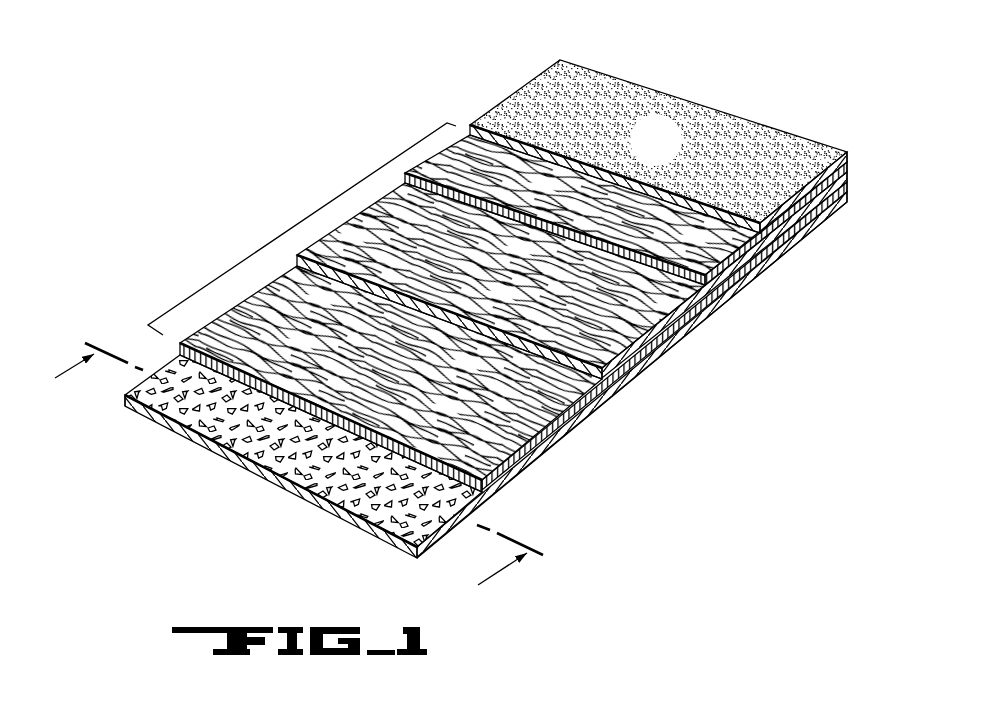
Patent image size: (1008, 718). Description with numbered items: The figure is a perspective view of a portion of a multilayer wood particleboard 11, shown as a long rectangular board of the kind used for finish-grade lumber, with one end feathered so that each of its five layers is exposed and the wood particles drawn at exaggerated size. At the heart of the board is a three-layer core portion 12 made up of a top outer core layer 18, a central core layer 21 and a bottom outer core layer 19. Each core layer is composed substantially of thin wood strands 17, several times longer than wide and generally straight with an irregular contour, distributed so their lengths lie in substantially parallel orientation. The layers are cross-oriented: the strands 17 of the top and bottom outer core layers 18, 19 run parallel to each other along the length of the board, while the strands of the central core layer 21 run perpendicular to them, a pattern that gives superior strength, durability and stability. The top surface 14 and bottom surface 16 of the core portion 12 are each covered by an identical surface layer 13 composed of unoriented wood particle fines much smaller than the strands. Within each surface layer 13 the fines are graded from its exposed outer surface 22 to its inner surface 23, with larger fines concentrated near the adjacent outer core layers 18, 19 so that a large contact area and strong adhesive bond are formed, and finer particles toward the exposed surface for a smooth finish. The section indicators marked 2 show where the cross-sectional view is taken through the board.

The multilayer wood particleboard 11 is at (456, 280).
The core portion 12 is at (497, 309).
The surface layer 13 is at (564, 58).
The top surface of core portion 14 is at (770, 257).
The bottom surface of core portion 16 is at (477, 495).
The wood strands 17 is at (683, 330).
The top outer core layer 18 is at (529, 288).
The bottom outer core layer 19 is at (574, 429).
The central core layer 21 is at (641, 361).
The exposed outer surface 22 is at (645, 151).
The inner surface 23 is at (470, 148).
The section line 2- 2 is at (299, 456).